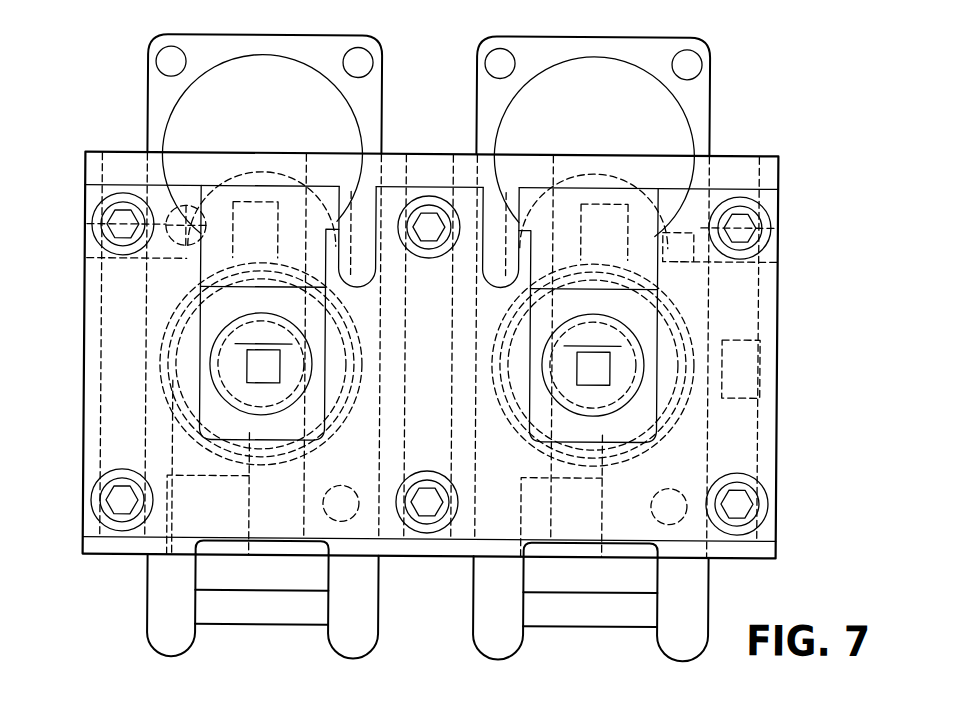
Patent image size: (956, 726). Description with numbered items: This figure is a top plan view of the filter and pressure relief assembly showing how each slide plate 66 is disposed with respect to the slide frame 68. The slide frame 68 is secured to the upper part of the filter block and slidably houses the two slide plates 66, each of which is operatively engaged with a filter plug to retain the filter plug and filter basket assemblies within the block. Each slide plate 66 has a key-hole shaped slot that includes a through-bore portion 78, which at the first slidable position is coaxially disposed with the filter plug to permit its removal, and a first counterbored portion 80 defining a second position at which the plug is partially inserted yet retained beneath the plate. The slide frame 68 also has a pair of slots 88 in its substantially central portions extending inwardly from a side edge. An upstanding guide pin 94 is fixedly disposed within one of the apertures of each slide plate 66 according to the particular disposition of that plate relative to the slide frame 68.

The slide plate 66 is at (162, 89).
The slide frame 68 is at (741, 428).
The through-bore portion 78 is at (277, 123).
The first undercut or counterbored portion 80 is at (183, 274).
The slots 88 is at (492, 205).
The upstanding guide pin 94 is at (363, 60).